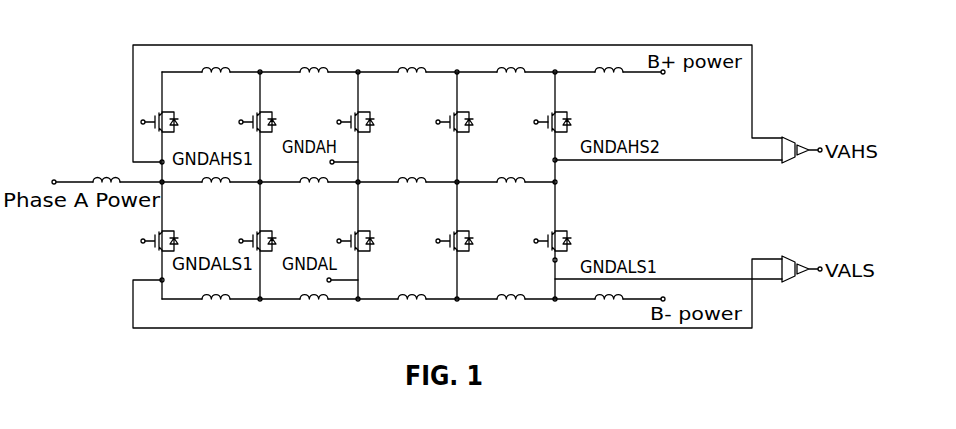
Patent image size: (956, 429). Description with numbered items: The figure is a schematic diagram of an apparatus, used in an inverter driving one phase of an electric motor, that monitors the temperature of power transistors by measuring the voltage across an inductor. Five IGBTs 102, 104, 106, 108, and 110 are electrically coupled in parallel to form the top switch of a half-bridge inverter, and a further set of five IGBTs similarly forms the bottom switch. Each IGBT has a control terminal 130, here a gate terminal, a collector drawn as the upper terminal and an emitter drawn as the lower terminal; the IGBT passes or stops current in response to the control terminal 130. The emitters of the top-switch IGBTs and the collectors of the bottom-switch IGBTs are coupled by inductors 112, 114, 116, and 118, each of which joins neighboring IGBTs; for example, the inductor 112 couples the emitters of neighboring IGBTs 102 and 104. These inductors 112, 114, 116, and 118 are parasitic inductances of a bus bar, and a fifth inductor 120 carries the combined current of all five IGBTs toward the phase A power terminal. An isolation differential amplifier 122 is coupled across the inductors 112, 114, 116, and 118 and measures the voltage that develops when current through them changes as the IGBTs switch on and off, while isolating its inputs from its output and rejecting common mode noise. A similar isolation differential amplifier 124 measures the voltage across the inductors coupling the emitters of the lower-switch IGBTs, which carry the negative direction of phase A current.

The IGBT 102 is at (553, 113).
The IGBT 104 is at (455, 113).
The IGBT 106 is at (356, 113).
The IGBT 108 is at (258, 113).
The IGBT 110 is at (161, 111).
The first inductor 112 is at (511, 185).
The second inductor 114 is at (412, 185).
The third inductor 116 is at (313, 185).
The fourth inductor 118 is at (215, 185).
The fifth inductor 120 is at (108, 175).
The isolation differential amplifier 122 is at (789, 137).
The isolation differential amplifier 124 is at (789, 257).
The control terminal 130 is at (540, 125).